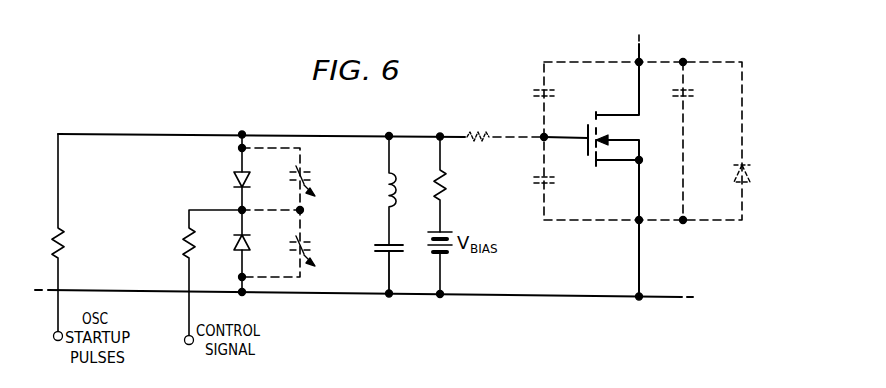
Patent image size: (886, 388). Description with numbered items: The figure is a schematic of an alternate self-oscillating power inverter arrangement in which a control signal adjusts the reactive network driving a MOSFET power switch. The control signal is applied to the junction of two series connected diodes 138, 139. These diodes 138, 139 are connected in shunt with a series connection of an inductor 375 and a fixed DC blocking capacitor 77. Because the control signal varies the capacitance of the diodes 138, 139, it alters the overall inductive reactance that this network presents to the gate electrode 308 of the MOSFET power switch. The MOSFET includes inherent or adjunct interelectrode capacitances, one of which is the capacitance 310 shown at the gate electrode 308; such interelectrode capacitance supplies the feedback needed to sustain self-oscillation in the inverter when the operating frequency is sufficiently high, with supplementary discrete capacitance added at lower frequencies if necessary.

The diode 138 is at (227, 181).
The diode 139 is at (227, 245).
The inductor 375 is at (374, 190).
The fixed DC blocking capacitor 77 is at (379, 266).
The gate electrode 308 is at (542, 134).
The interelectrode capacitance 310 is at (538, 180).